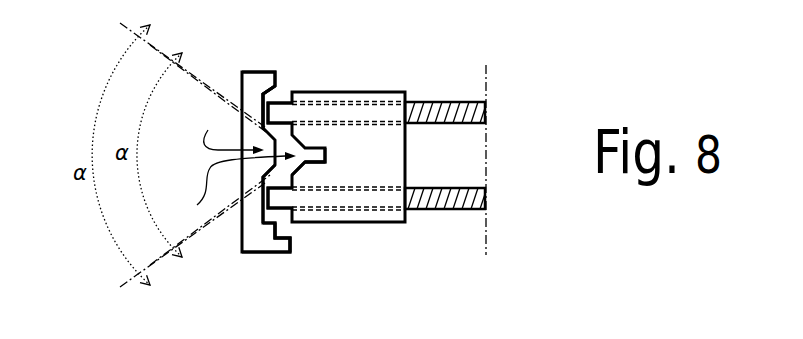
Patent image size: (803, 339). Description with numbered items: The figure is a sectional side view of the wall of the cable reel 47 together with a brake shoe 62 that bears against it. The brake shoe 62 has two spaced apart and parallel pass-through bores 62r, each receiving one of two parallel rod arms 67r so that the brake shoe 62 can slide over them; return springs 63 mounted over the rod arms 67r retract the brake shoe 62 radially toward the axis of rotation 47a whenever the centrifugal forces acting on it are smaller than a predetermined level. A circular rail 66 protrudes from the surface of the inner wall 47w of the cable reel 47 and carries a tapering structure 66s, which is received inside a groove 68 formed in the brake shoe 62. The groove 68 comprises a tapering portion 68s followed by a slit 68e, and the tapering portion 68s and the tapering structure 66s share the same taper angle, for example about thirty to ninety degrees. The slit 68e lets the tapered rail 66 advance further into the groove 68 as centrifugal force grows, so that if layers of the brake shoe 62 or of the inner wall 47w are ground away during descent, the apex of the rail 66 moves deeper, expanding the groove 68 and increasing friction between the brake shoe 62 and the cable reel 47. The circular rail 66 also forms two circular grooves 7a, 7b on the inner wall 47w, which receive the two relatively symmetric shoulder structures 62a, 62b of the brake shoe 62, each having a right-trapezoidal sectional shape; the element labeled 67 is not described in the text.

The cable reel 47 is at (242, 78).
The circular groove 7a is at (259, 107).
The circular groove 7b is at (269, 240).
The inner wall 47w is at (268, 92).
The axis of rotation 47a is at (486, 90).
The brake shoe 62 is at (345, 92).
The shoulder structure 62a is at (284, 100).
The shoulder structure 62b is at (293, 221).
The pass-through bores 62r is at (357, 185).
The return springs 63 is at (462, 124).
The circular rail 66 is at (230, 131).
The tapering structure 66s is at (263, 177).
The foot of plate 67 is at (288, 240).
The rod arms 67r is at (370, 196).
The groove 68 is at (234, 188).
The tapering portion 68s is at (303, 163).
The slit 68e is at (313, 163).